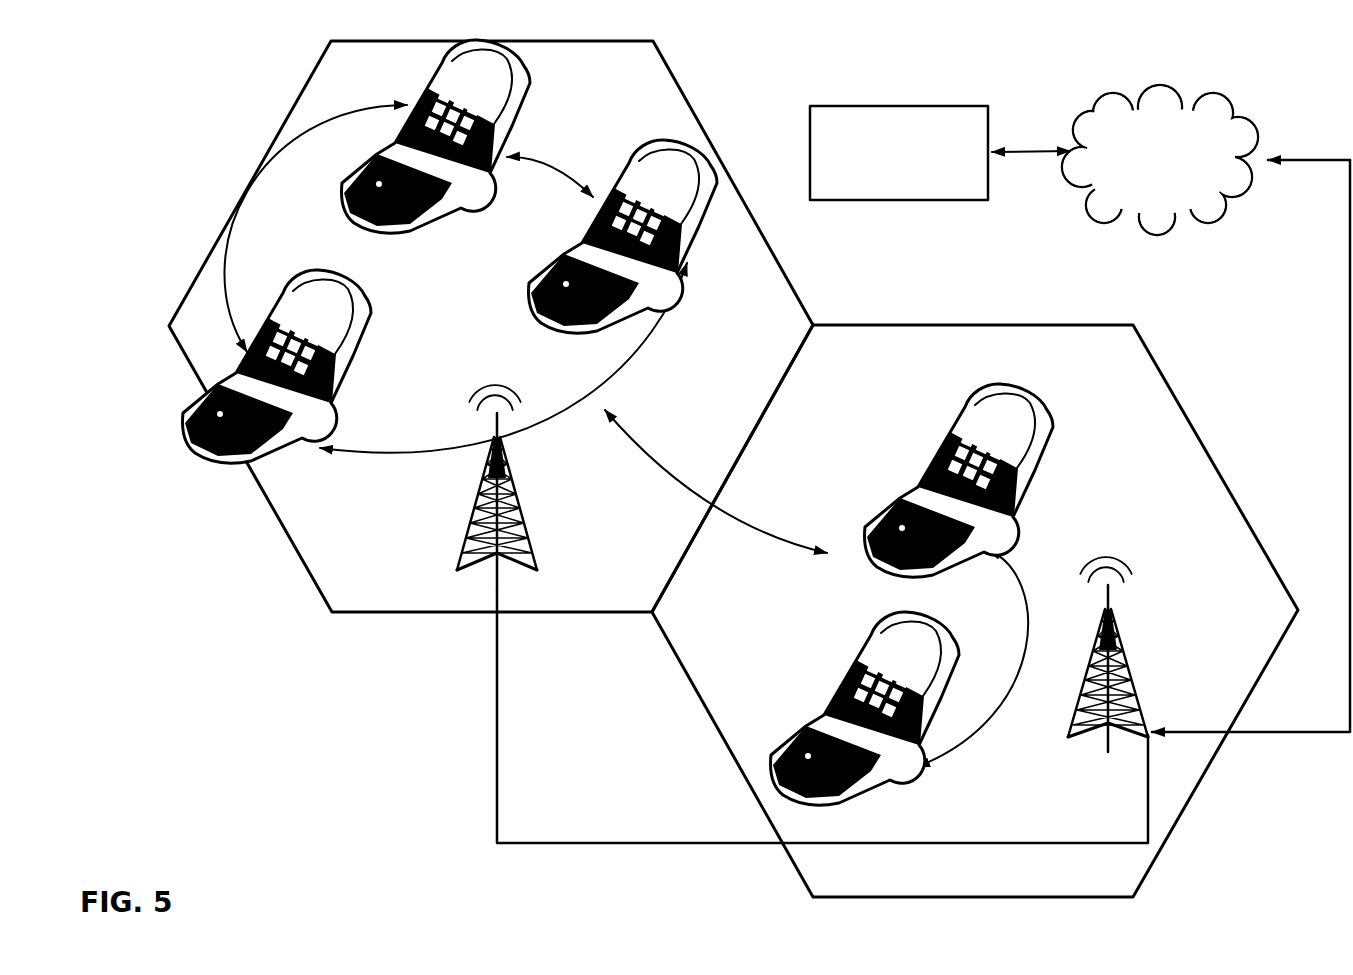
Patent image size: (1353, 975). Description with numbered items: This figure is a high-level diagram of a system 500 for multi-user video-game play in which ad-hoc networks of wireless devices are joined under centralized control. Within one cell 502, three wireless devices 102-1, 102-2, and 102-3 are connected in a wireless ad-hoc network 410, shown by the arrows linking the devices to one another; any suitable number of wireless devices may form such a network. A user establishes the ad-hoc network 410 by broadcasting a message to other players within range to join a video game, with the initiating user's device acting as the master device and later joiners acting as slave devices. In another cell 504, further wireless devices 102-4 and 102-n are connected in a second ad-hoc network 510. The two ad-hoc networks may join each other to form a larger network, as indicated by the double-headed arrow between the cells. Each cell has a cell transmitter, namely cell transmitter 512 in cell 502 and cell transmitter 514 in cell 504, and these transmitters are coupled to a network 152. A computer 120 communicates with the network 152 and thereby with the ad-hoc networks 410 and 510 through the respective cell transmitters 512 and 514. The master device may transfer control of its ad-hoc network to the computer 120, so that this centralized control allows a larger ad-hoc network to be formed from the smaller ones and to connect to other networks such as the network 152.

The wireless device 102-1 is at (532, 112).
The wireless device 102-2 is at (333, 428).
The wireless device 102-3 is at (693, 212).
The wireless device 102-4 is at (1030, 505).
The wireless device 102-n is at (831, 702).
The computer 120 is at (877, 182).
The network 152 is at (1138, 195).
The wireless ad-hoc network 410 is at (224, 248).
The system 500 is at (961, 72).
The cell 502 is at (386, 539).
The cell 504 is at (1240, 622).
The ad-hoc network 510 is at (1000, 704).
The cell transmitter 512 is at (522, 523).
The cell transmitter 514 is at (1130, 702).